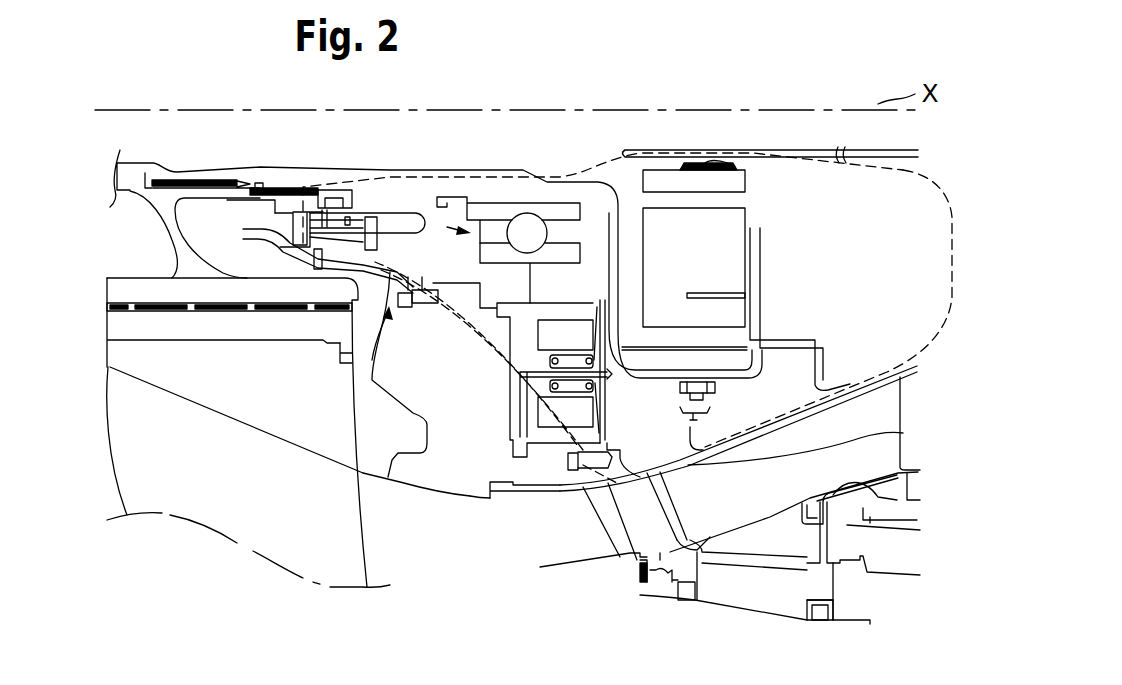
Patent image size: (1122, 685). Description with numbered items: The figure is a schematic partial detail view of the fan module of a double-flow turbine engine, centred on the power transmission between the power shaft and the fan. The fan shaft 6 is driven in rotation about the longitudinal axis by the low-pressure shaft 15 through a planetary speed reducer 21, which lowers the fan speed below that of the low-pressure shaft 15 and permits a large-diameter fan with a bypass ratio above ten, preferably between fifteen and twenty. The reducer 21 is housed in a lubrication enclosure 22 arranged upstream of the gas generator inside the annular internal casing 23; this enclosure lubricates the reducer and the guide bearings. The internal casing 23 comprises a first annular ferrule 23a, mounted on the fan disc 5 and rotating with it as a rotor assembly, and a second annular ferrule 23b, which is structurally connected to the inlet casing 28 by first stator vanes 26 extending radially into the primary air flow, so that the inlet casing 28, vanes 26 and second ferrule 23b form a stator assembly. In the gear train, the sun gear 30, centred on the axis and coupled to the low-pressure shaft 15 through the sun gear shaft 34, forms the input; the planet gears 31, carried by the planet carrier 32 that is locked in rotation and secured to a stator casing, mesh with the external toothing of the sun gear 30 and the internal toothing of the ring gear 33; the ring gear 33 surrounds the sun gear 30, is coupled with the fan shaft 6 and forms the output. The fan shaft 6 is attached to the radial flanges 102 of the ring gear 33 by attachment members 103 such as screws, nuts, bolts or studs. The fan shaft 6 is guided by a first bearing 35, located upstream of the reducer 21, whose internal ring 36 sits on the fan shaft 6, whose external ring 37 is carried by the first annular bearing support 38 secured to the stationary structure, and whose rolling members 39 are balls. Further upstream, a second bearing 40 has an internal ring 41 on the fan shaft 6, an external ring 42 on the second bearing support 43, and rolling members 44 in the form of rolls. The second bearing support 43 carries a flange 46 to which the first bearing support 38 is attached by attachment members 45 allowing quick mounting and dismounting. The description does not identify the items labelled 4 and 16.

The fan hub 4 is at (152, 452).
The fan disc 5 is at (133, 288).
The fan shaft 6 is at (182, 173).
The low-pressure shaft 15 is at (855, 152).
The outlet guide vane 16 is at (612, 580).
The speed reducer 21 is at (607, 150).
The lubrication enclosure 22 is at (950, 220).
The internal casing 23 is at (473, 490).
The first annular ferrule 23a is at (433, 493).
The second annular ferrule 23b is at (547, 490).
The first stator vanes 26 is at (563, 548).
The inlet casing 28 is at (775, 593).
The sun gear 30 is at (735, 180).
The planet gears 31 is at (697, 243).
The planet carrier 32 is at (753, 310).
The ring gear 33 is at (733, 358).
The sun gear shaft 34 is at (737, 158).
The first bearing 35 is at (413, 222).
The internal ring 36 is at (500, 205).
The external ring 37 is at (503, 257).
The first annular bearing support 38 is at (520, 293).
The rolling members 39 is at (530, 225).
The second bearing 40 is at (330, 188).
The internal ring 41 is at (340, 188).
The external ring 42 is at (310, 187).
The second bearing support 43 is at (353, 320).
The rolling members 44 is at (300, 212).
The attachment members 45 is at (363, 367).
The flange 46 is at (415, 306).
The radial flanges 102 is at (810, 462).
The attachment members 103 is at (727, 388).